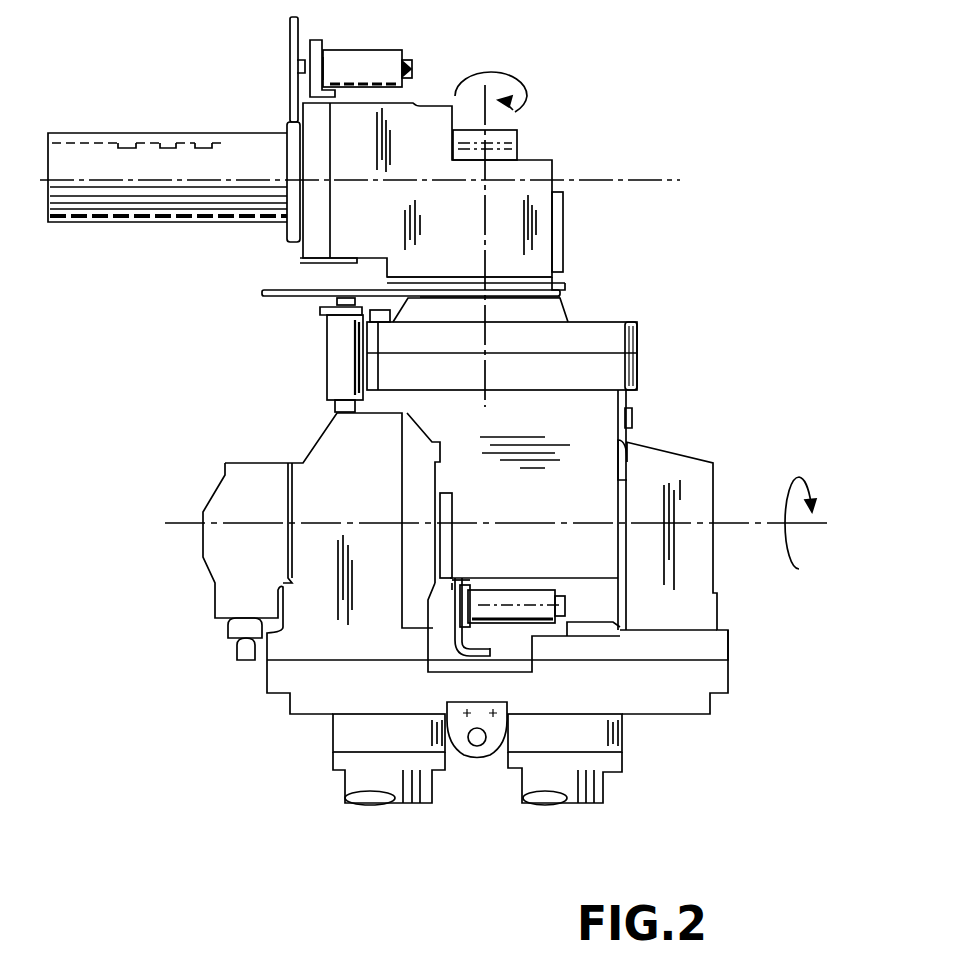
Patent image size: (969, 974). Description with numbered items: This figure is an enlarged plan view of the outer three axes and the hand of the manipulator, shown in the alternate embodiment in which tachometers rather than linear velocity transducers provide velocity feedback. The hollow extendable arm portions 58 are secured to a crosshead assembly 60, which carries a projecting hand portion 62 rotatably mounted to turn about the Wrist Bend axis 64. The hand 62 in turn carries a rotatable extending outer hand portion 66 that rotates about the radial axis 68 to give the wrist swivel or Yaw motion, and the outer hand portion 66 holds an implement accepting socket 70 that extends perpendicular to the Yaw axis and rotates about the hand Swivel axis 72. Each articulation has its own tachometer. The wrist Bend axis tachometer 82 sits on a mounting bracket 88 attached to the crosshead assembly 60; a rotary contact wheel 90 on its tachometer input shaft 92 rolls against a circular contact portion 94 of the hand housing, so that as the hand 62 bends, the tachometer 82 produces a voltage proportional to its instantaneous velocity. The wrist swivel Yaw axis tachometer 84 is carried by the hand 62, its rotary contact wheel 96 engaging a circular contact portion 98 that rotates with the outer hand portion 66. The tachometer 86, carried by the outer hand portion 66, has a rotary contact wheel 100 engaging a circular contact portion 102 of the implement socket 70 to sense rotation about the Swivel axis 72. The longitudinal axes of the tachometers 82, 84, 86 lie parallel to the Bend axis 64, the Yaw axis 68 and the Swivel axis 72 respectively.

The hollow extendable arm portions 58 is at (343, 790).
The crosshead assembly 60 is at (734, 688).
The hand portion 62 is at (649, 367).
The Wrist Bend axis 64 is at (823, 531).
The outer hand portion 66 is at (556, 160).
The radial axis 68 is at (512, 100).
The implement accepting socket 70 is at (187, 126).
The hand Swivel axis 72 is at (663, 177).
The wrist Bend axis tachometer 82 is at (582, 607).
The wrist swivel Yaw axis tachometer 84 is at (340, 357).
The tachometer 86 is at (325, 28).
The mounting bracket 88 is at (464, 652).
The rotary contact wheel 90 is at (428, 640).
The tachometer input shaft 92 is at (455, 578).
The circular contact portion 94 is at (446, 572).
The rotary contact wheel 96 is at (300, 290).
The circular contact portion 98 is at (557, 291).
The rotary contact wheel 100 is at (287, 47).
The circular contact portion 102 is at (287, 122).